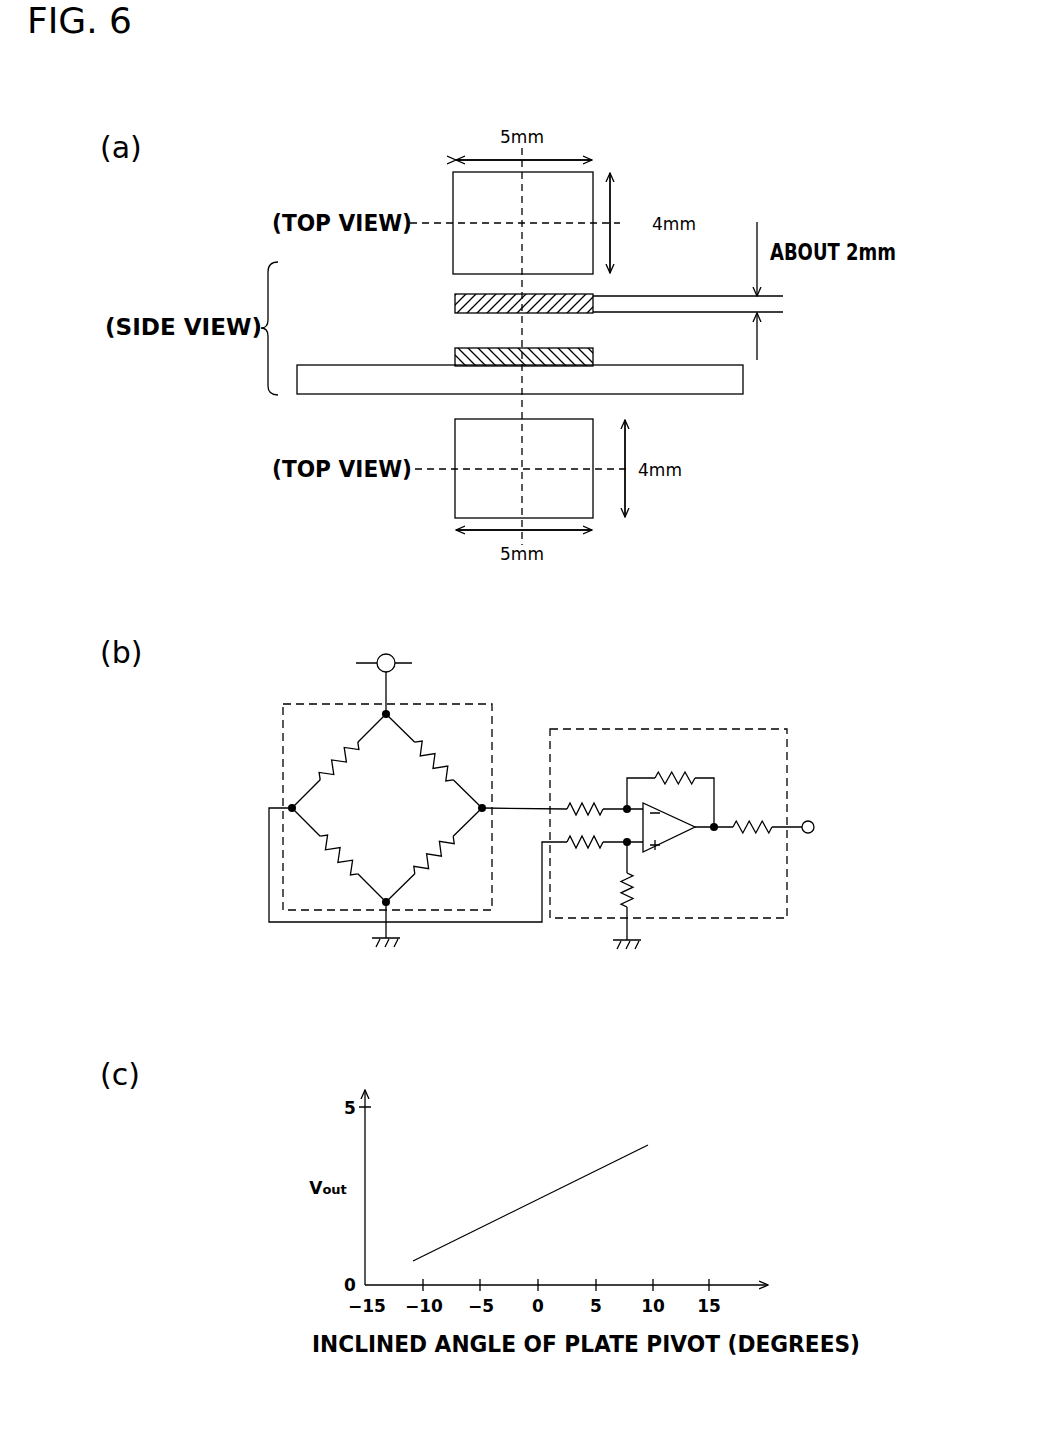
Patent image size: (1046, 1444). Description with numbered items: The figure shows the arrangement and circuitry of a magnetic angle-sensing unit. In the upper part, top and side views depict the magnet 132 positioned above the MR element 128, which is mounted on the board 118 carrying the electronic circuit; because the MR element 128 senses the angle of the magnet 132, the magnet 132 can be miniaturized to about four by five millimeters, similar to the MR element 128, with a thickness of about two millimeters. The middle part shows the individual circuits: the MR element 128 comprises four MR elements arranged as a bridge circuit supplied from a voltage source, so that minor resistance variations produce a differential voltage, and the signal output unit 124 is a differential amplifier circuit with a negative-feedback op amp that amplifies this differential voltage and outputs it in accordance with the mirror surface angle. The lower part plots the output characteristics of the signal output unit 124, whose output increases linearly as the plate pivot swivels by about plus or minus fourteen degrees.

The board 118 is at (743, 380).
The signal output unit 124 is at (755, 729).
The MR element 128 is at (593, 352).
The magnet 132 is at (453, 255).